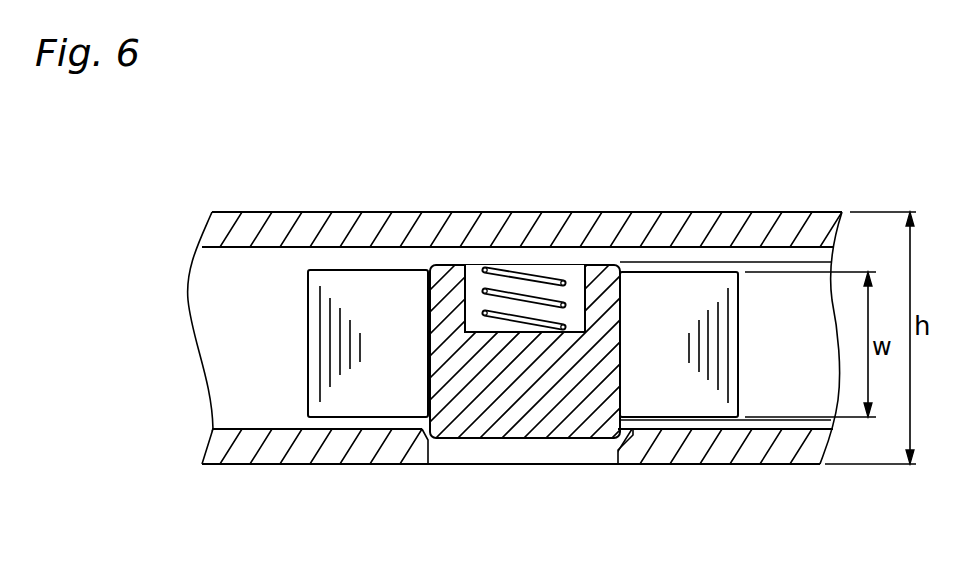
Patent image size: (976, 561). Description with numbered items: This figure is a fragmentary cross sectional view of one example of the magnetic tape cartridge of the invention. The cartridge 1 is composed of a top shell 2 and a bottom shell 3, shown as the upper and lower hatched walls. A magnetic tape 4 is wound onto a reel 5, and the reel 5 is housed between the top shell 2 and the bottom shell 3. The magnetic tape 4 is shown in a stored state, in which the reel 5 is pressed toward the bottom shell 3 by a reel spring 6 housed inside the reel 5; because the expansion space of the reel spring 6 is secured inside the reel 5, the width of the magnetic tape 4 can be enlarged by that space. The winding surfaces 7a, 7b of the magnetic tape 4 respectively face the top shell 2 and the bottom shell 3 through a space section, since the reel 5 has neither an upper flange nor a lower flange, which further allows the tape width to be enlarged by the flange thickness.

The cartridge 1 is at (606, 208).
The top shell 2 is at (757, 224).
The bottom shell 3 is at (758, 453).
The magnetic tape 4 is at (378, 392).
The reel 5 is at (515, 395).
The reel spring 6 is at (525, 275).
The winding surface 7a is at (664, 270).
The winding surface 7b is at (680, 423).